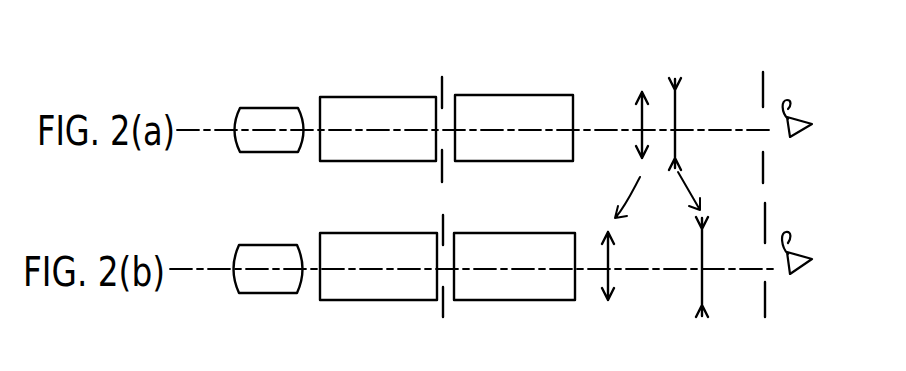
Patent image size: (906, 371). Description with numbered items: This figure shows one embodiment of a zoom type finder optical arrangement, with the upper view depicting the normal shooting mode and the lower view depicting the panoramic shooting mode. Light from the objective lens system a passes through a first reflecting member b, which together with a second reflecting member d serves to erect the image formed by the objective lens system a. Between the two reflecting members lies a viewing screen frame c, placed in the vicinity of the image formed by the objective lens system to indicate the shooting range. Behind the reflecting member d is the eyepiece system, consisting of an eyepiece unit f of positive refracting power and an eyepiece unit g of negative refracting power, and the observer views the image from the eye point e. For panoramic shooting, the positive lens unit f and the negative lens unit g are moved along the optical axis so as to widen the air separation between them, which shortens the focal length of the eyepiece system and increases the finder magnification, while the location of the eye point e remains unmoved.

In FIG. 2A, the objective lens system a is at (268, 108).
In FIG. 2B, the objective lens system a is at (268, 269).
In FIG. 2A, the reflecting member b is at (366, 97).
In FIG. 2B, the reflecting member b is at (378, 266).
In FIG. 2A, the viewing screen frame c is at (445, 79).
In FIG. 2A, the reflecting member d is at (537, 95).
In FIG. 2B, the reflecting member d is at (514, 266).
In FIG. 2A, the eye point e is at (767, 75).
In FIG. 2B, the eye point e is at (788, 260).
In FIG. 2A, the eyepiece unit of positive refracting power f is at (643, 90).
In FIG. 2B, the eyepiece unit of positive refracting power f is at (608, 266).
In FIG. 2A, the eyepiece unit of negative refracting power g is at (677, 78).
In FIG. 2B, the eyepiece unit of negative refracting power g is at (702, 267).